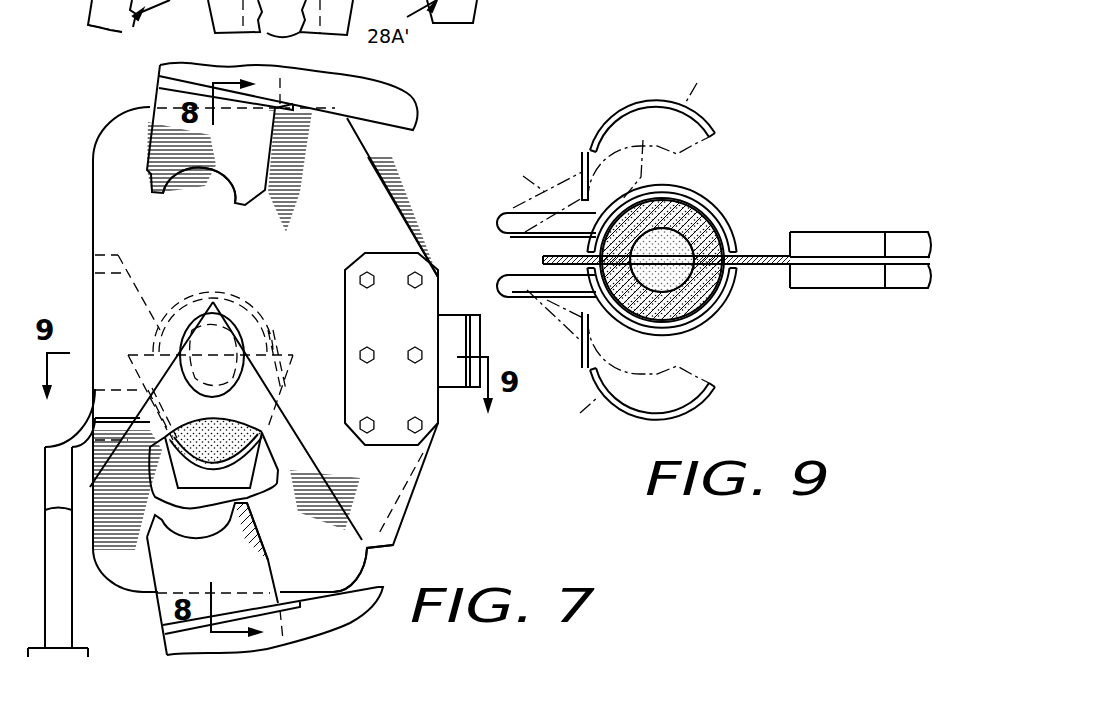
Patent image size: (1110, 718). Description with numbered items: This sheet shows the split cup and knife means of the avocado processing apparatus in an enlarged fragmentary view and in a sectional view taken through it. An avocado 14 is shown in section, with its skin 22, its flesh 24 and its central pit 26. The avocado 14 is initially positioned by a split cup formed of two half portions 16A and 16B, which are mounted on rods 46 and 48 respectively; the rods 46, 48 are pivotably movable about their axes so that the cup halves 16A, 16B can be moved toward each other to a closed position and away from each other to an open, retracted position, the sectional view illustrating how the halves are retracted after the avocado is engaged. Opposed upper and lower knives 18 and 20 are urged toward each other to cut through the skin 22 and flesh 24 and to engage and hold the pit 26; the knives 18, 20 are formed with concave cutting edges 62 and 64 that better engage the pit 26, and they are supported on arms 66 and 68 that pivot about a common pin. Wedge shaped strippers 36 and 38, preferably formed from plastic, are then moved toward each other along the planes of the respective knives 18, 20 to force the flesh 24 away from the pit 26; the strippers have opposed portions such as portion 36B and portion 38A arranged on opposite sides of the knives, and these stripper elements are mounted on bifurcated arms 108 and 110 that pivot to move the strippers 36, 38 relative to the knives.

In FIG. 9, the avocado 14 is at (685, 215).
In FIG. 7, the cup half portion 16A is at (250, 490).
In FIG. 9, the cup half portion 16A is at (722, 363).
In FIG. 9, the cup half portion 16B is at (636, 376).
In FIG. 7, the upper knife 18 is at (241, 245).
In FIG. 7, the lower knife 20 is at (353, 580).
In FIG. 9, the lower knife 20 is at (547, 257).
In FIG. 7, the avocado skin 22 is at (255, 310).
In FIG. 9, the avocado skin 22 is at (697, 200).
In FIG. 7, the avocado flesh 24 is at (173, 323).
In FIG. 9, the avocado flesh 24 is at (695, 232).
In FIG. 7, the avocado pit 26 is at (227, 343).
In FIG. 9, the avocado pit 26 is at (683, 275).
In FIG. 7, the wedge shaped stripper 36 is at (145, 130).
In FIG. 7, the stripper portion 36B is at (153, 186).
In FIG. 7, the wedge shaped stripper 38 is at (212, 579).
In FIG. 7, the stripper portion 38A is at (258, 581).
In FIG. 7, the rod 46 is at (96, 391).
In FIG. 9, the rod 46 is at (545, 199).
In FIG. 7, the rod 48 is at (62, 623).
In FIG. 9, the rod 48 is at (545, 343).
In FIG. 7, the concave cutting edge 62 is at (214, 300).
In FIG. 7, the concave cutting edge 64 is at (237, 388).
In FIG. 7, the arm 66 is at (450, 338).
In FIG. 7, the arm 68 is at (472, 370).
In FIG. 7, the bifurcated arm 108 is at (413, 101).
In FIG. 7, the bifurcated arm 110 is at (345, 618).